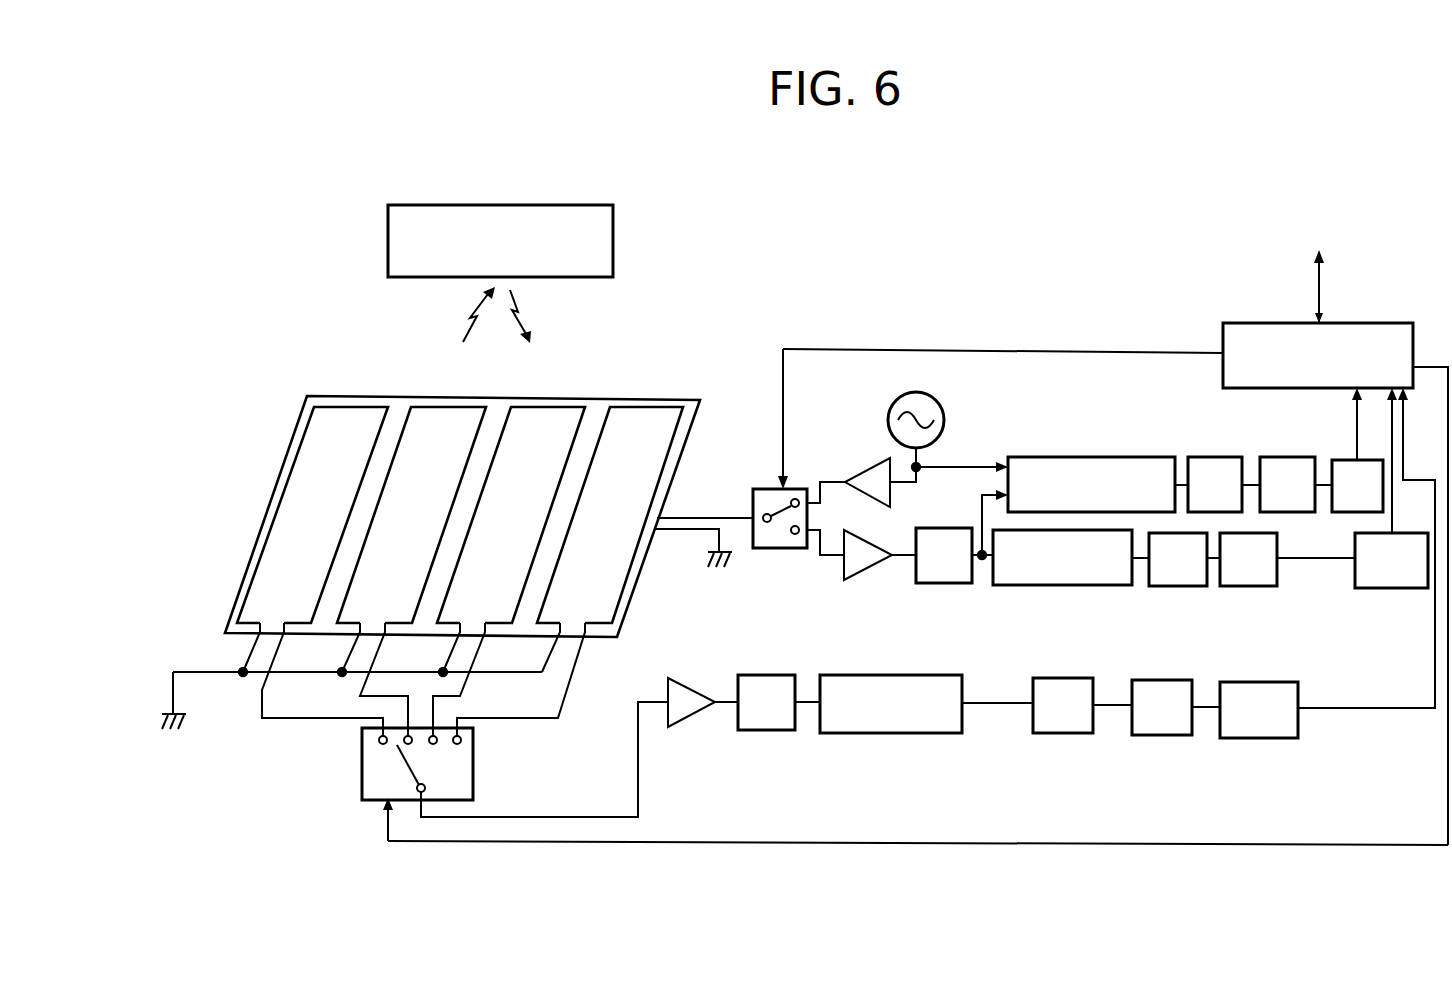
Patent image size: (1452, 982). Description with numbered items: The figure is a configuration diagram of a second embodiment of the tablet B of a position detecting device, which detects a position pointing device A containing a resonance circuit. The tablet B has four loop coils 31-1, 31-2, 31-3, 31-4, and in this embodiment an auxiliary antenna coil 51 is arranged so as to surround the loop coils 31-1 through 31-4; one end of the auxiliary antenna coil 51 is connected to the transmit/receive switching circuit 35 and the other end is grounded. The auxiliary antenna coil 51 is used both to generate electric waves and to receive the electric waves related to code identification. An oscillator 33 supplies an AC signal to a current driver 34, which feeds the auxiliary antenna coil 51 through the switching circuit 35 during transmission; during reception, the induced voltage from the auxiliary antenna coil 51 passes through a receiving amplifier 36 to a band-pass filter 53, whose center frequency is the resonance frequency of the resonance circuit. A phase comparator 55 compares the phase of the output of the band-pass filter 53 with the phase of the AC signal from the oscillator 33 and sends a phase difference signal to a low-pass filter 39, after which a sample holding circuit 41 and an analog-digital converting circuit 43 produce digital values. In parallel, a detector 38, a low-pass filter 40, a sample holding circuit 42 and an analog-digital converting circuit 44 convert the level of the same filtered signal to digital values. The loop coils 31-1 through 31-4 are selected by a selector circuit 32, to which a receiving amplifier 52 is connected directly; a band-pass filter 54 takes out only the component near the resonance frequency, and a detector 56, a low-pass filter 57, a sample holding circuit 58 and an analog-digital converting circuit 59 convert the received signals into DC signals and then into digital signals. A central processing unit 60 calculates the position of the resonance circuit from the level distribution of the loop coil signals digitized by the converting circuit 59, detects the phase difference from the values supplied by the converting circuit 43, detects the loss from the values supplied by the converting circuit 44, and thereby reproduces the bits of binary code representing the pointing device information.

The position pointing device A is at (521, 205).
The tablet B is at (876, 331).
The loop coil 31-1 is at (328, 407).
The loop coil 31-2 is at (431, 407).
The loop coil 31-3 is at (548, 407).
The loop coil 31-4 is at (657, 408).
The auxiliary antenna coil 51 is at (681, 452).
The selector circuit 32 is at (362, 768).
The oscillator 33 is at (929, 396).
The current driver 34 is at (872, 470).
The transmit/receive switching circuit 35 is at (773, 549).
The receiving amplifier 36 is at (868, 568).
The band-pass filter 53 is at (945, 584).
The phase comparator 55 is at (1088, 457).
The detector 38 is at (1093, 586).
The low-pass filter 39 is at (1205, 457).
The low-pass filter 40 is at (1178, 587).
The sample holding circuit 41 is at (1283, 457).
The sample holding circuit 42 is at (1267, 587).
The analog-digital converting circuit 43 is at (1346, 460).
The analog-digital converting circuit 44 is at (1387, 589).
The receiving amplifier 52 is at (690, 716).
The band-pass filter 54 is at (772, 731).
The detector 56 is at (912, 734).
The low-pass filter 57 is at (1070, 734).
The sample holding circuit 58 is at (1165, 736).
The analog-digital converting circuit 59 is at (1265, 739).
The central processing unit 60 is at (1383, 323).